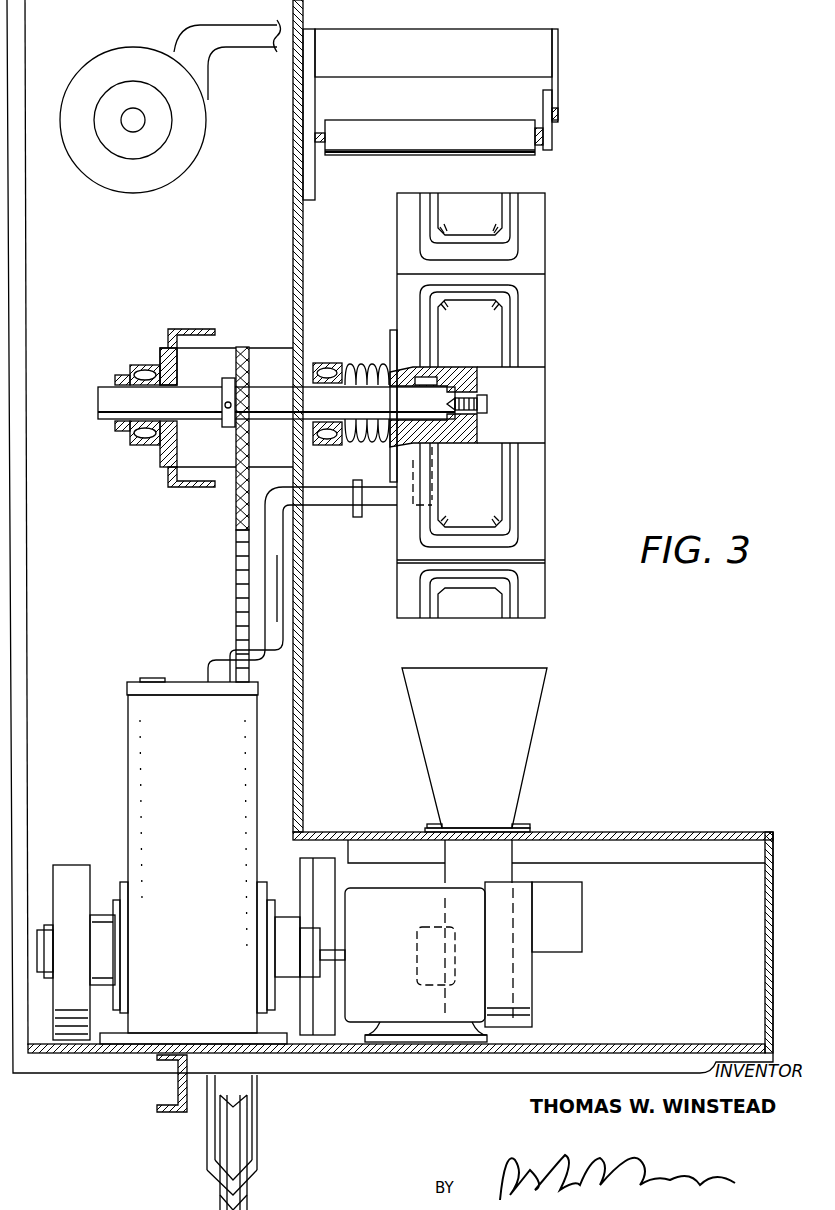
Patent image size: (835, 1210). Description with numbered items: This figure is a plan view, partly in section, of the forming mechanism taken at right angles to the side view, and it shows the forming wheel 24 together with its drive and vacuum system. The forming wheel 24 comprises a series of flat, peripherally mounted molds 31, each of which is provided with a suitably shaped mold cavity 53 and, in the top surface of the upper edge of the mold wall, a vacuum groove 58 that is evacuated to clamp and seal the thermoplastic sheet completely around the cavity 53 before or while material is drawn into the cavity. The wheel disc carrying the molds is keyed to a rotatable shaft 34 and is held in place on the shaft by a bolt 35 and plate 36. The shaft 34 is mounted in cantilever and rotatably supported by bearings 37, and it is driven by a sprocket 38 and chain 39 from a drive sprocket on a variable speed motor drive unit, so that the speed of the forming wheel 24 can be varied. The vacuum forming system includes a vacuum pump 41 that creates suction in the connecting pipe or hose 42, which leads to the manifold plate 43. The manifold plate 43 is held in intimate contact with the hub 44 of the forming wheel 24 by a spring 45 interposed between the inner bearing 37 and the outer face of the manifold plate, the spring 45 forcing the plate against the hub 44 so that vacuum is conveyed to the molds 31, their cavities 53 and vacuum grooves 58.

The forming wheel 24 is at (504, 405).
The mold 31 is at (537, 497).
The shaft 34 is at (353, 395).
The bolt 35 is at (488, 400).
The plate 36 is at (480, 430).
The bearings 37 is at (145, 450).
The sprocket 38 is at (252, 350).
The chain 39 is at (234, 534).
The vacuum pump 41 is at (182, 761).
The connecting pipe or hose 42 is at (377, 508).
The manifold plate 43 is at (394, 330).
The hub 44 is at (446, 368).
The spring 45 is at (372, 447).
The mold cavity 53 is at (500, 316).
The vacuum groove 58 is at (522, 228).